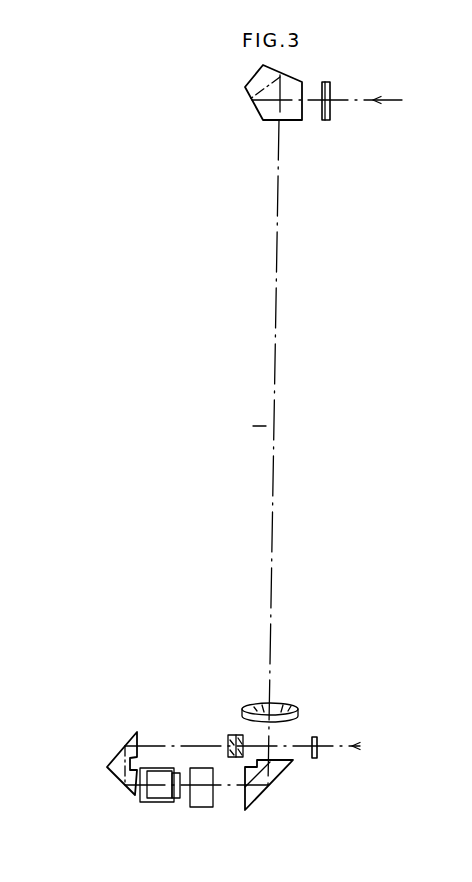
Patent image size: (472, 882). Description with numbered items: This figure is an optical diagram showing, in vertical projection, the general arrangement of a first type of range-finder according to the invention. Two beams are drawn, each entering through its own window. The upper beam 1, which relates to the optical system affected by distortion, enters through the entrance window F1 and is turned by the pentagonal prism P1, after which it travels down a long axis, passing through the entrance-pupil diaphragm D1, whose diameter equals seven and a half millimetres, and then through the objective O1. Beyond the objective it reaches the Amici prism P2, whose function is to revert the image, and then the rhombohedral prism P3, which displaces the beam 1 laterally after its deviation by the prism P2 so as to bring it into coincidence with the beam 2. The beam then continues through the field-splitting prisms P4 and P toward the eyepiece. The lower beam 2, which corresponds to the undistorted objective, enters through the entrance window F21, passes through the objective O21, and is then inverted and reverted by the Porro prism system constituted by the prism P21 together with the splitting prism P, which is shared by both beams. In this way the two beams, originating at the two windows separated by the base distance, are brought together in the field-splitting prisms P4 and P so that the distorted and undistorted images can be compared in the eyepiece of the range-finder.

The upper beam 1 is at (384, 103).
The lower beam 2 is at (173, 743).
The pentagonal prism P1 is at (263, 120).
The entrance window F1 is at (327, 120).
The entrance-pupil diaphragm D1 is at (298, 427).
The objective O1 is at (289, 703).
The objective O21 is at (233, 736).
The prism P21 is at (110, 758).
The splitting prism P is at (142, 802).
The field-splitting prism P4 is at (168, 794).
The rhombohedral prism P3 is at (206, 800).
The Amici prism P2 is at (285, 772).
The entrance window F21 is at (317, 757).